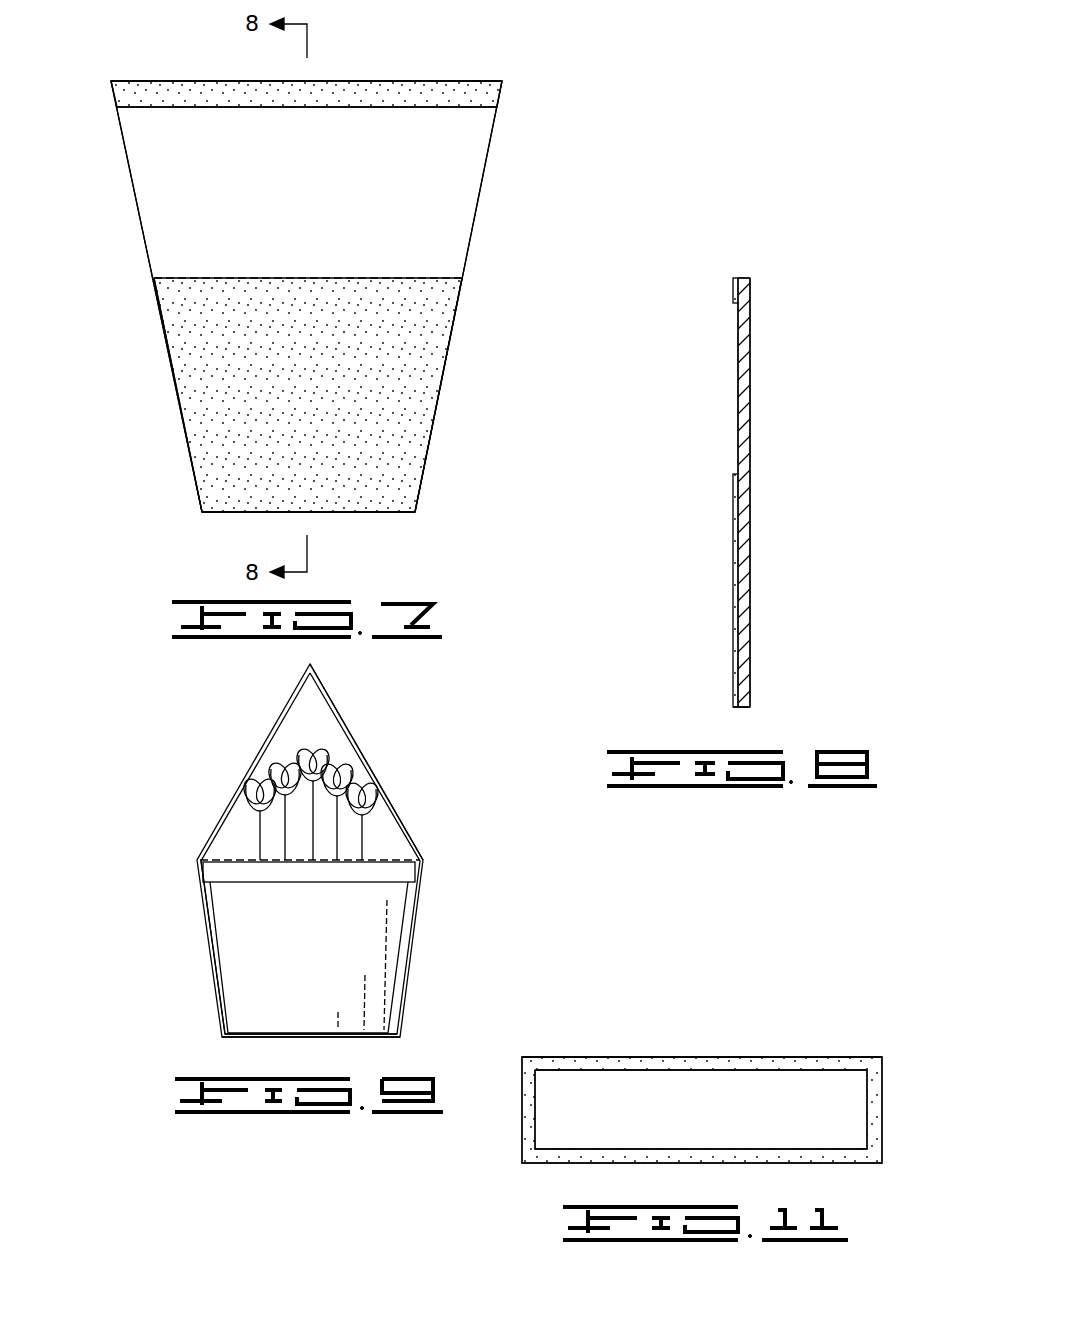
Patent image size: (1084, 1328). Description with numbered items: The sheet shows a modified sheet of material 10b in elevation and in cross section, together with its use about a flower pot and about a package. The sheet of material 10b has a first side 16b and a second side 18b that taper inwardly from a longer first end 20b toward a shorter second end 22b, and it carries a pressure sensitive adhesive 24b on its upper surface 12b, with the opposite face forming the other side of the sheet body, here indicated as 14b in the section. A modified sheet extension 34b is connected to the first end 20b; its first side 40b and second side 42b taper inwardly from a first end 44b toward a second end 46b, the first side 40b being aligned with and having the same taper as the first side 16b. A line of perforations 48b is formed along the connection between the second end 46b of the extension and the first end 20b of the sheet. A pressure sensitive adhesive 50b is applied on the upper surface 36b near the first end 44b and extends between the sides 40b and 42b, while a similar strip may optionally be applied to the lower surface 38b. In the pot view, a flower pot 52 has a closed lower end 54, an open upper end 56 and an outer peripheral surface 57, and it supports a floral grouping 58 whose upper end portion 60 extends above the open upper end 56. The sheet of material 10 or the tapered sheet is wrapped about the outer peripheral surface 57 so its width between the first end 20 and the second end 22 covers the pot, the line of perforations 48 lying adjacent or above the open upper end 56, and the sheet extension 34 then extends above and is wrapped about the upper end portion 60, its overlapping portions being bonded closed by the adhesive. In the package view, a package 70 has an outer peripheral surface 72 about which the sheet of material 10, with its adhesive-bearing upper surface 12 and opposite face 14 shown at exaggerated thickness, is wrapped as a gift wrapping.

In FIG. 7, the modified sheet of material 10b is at (438, 397).
In FIG. 7, the upper surface 12b is at (405, 453).
In FIG. 8, the upper surface 12b is at (735, 630).
In FIG. 8, the side wall of sleeve 14b is at (751, 558).
In FIG. 7, the first side 16b is at (182, 416).
In FIG. 7, the second side 18b is at (450, 340).
In FIG. 7, the first end 20b is at (360, 277).
In FIG. 7, the second end 22b is at (366, 515).
In FIG. 8, the second end 22b is at (743, 707).
In FIG. 7, the pressure sensitive adhesive 24b is at (430, 310).
In FIG. 8, the pressure sensitive adhesive 24b is at (733, 525).
In FIG. 7, the modified sheet extension 34b is at (466, 136).
In FIG. 8, the modified sheet extension 34b is at (745, 342).
In FIG. 7, the upper surface 36b is at (463, 187).
In FIG. 8, the upper surface 36b is at (738, 368).
In FIG. 8, the lower surface 38b is at (751, 398).
In FIG. 7, the first side 40b is at (131, 173).
In FIG. 7, the second side 42b is at (476, 220).
In FIG. 7, the first end 44b is at (360, 81).
In FIG. 8, the first end 44b is at (745, 278).
In FIG. 7, the second end 46b is at (213, 283).
In FIG. 7, the line of perforations 48b is at (285, 272).
In FIG. 7, the pressure sensitive adhesive 50b is at (450, 97).
In FIG. 8, the pressure sensitive adhesive 50b is at (733, 290).
In FIG. 9, the sheet of material 10 is at (424, 955).
In FIG. 11, the sheet of material 10 is at (625, 1050).
In FIG. 9, the sheet extension 34 is at (326, 690).
In FIG. 9, the open upper end 56 is at (400, 860).
In FIG. 9, the first end 20 is at (197, 862).
In FIG. 9, the flower pot 52 is at (384, 902).
In FIG. 9, the outer peripheral surface 57 is at (212, 918).
In FIG. 9, the second end 22 is at (222, 1036).
In FIG. 9, the closed lower end 54 is at (387, 1037).
In FIG. 9, the upper end portion 60 is at (374, 822).
In FIG. 9, the floral grouping 58 is at (282, 758).
In FIG. 9, the line of perforations 48 is at (225, 858).
In FIG. 11, the side wall of sleeve (14 or 14a) 14 is at (563, 1148).
In FIG. 11, the upper surface 12 is at (653, 1057).
In FIG. 11, the package 70 is at (759, 1062).
In FIG. 11, the outer peripheral surface 72 is at (818, 1072).